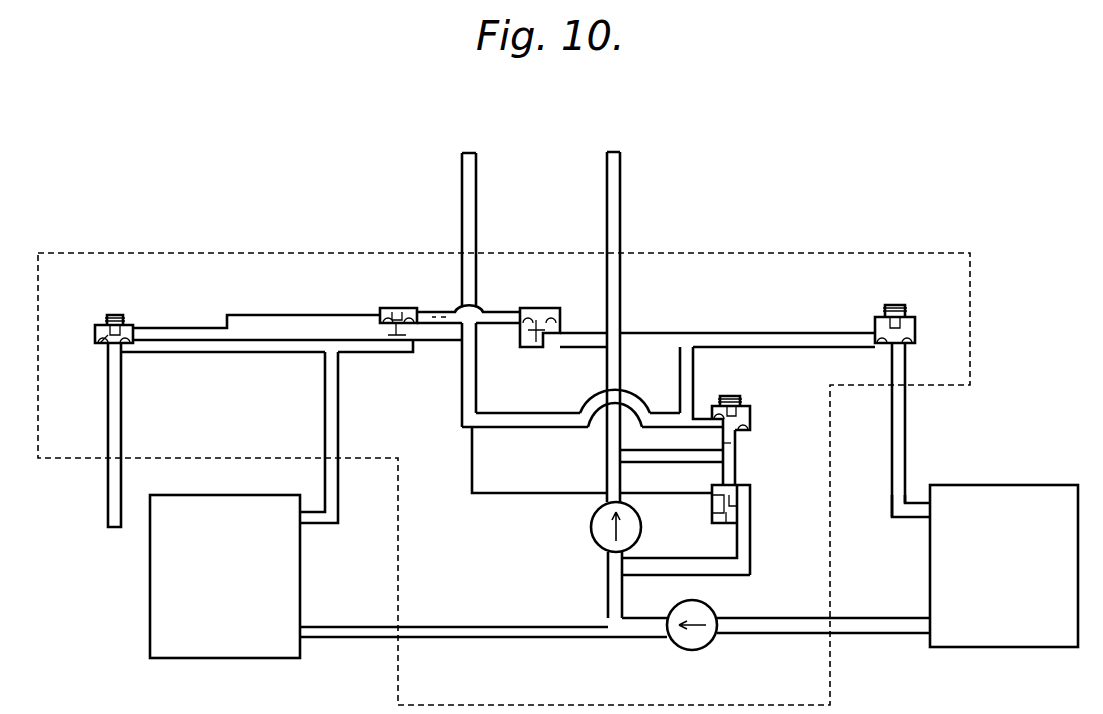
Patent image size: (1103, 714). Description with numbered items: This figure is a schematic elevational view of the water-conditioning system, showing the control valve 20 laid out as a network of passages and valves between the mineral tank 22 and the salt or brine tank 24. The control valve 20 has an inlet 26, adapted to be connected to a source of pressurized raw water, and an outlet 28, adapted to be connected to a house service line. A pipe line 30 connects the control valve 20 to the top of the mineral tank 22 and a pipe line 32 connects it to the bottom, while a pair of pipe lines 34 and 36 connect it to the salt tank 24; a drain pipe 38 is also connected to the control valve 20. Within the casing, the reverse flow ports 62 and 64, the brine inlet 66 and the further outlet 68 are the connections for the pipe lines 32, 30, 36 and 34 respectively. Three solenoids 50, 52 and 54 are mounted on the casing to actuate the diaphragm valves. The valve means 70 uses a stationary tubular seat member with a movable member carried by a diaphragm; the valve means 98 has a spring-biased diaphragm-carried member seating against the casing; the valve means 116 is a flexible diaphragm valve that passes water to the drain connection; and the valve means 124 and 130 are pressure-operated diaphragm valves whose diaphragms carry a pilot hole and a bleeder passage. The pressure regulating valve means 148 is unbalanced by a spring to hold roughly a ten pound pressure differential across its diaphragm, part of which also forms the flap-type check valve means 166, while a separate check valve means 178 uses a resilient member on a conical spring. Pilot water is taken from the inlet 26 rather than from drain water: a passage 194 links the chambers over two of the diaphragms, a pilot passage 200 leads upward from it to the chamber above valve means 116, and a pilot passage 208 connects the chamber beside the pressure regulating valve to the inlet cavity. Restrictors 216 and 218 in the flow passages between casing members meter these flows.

The control valve 20 is at (978, 322).
The mineral tank 22 is at (232, 587).
The salt or brine tank 24 is at (1012, 581).
The inlet 26 is at (468, 153).
The outlet 28 is at (613, 152).
The pipe line 30 is at (340, 511).
The pipe line 32 is at (360, 626).
The pipe line 34 is at (892, 496).
The pipe line 36 is at (860, 618).
The drain pipe 38 is at (108, 526).
The solenoid 50 is at (120, 316).
The solenoid 52 is at (735, 398).
The solenoid 54 is at (903, 316).
The reverse flow port 62 is at (414, 627).
The reverse flow port 64 is at (340, 441).
The brine inlet 66 is at (812, 604).
The outlet 68 is at (905, 368).
The valve means 70 is at (400, 340).
The valve means 98 is at (538, 343).
The valve means 116 is at (100, 343).
The valve means 124 is at (750, 422).
The valve means 130 is at (888, 340).
The pressure regulating valve means 148 is at (722, 520).
The check valve means 166 is at (592, 532).
The check valve means 178 is at (688, 648).
The passage 194 is at (480, 312).
The pilot passage 200 is at (260, 316).
The pilot passage 208 is at (492, 497).
The restrictor 216 is at (733, 444).
The restrictor 218 is at (668, 458).